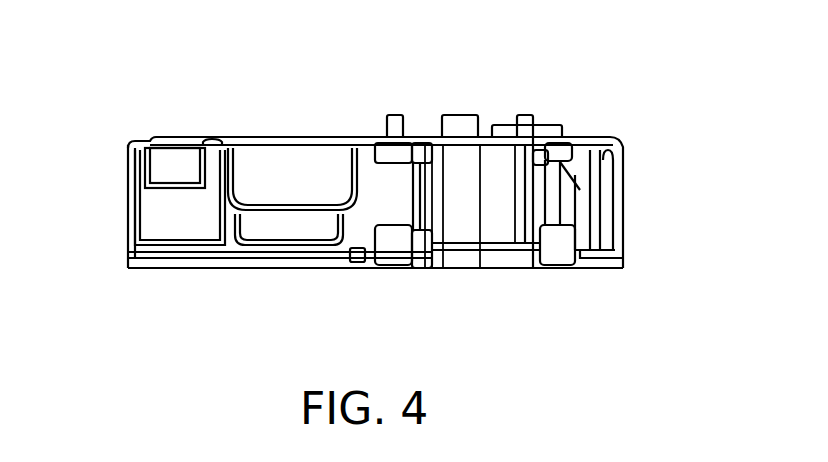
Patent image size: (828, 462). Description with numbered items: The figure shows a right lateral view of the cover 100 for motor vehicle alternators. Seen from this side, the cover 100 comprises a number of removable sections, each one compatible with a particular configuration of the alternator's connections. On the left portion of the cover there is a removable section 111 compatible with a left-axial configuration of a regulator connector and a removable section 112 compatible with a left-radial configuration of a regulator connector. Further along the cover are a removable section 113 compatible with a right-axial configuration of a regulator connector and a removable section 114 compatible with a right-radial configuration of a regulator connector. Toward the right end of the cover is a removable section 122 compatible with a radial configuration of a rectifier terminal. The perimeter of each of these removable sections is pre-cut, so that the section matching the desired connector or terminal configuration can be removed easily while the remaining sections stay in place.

The cover 100 is at (198, 101).
The removable section compatible with a left-axial configuration of a regulator conn 111 is at (175, 175).
The removable section compatible with a left-radial configuration of a regulator con 112 is at (173, 216).
The removable section compatible with a right-axial configuration of a regulator con 113 is at (272, 173).
The removable section compatible with a right-radial configuration of a regulator co 114 is at (288, 228).
The removable section compatible with a radial configuration of a rectifier terminal 122 is at (463, 215).